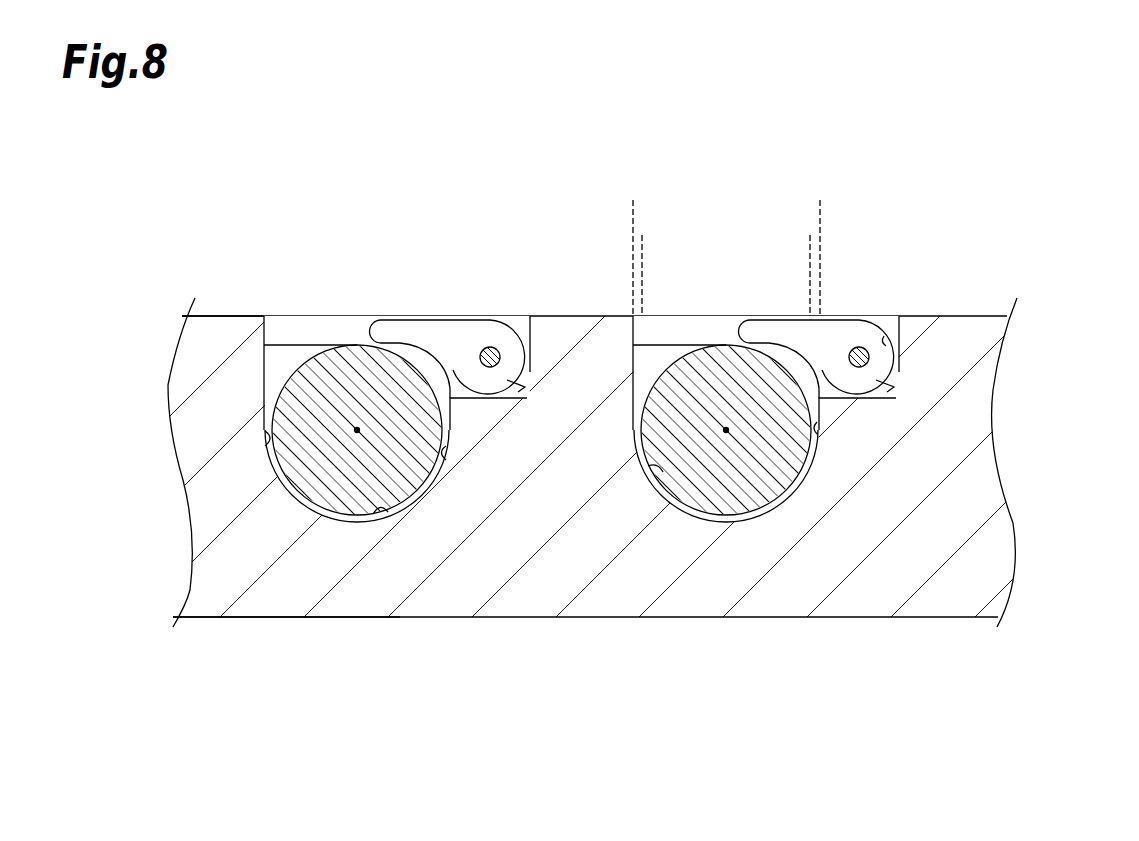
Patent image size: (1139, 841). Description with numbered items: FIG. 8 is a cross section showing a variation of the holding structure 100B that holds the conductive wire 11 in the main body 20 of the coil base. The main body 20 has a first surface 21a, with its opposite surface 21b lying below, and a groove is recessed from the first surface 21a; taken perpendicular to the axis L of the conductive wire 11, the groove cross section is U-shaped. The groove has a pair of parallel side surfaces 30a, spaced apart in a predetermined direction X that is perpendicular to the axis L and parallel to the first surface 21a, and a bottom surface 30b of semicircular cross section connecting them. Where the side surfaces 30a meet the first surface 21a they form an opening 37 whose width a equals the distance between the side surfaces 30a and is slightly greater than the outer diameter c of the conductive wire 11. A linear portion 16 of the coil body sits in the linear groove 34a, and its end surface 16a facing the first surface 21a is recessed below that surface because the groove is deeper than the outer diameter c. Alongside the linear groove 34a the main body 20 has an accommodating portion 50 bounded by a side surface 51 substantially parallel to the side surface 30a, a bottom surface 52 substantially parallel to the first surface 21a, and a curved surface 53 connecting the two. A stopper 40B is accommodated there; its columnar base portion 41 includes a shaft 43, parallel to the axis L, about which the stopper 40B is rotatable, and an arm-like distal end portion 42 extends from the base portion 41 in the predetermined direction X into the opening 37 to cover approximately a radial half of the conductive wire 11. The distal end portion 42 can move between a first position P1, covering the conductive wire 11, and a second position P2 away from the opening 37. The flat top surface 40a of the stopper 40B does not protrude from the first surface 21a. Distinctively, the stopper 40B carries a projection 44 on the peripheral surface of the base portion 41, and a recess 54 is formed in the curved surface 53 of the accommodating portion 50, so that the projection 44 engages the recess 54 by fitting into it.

The holding structure 100B is at (413, 178).
The main body 20 is at (1013, 497).
The first surface 21a is at (214, 316).
The lower surface of base member 21b is at (255, 617).
The opening 37 is at (265, 335).
The conductive wire 11 is at (305, 344).
The linear portion 16 is at (347, 490).
The end surface 16a is at (355, 344).
The axis L is at (354, 434).
The side surface 30a is at (266, 445).
The bottom surface 30b is at (381, 514).
The linear groove 34a is at (270, 388).
The stopper 40B is at (520, 316).
The top surface 40a is at (462, 320).
The base portion 41 is at (523, 312).
The distal end portion 42 is at (420, 320).
The shaft 43 is at (491, 368).
The projection 44 is at (453, 372).
The accommodating portion 50 is at (521, 312).
The side surface 51 is at (888, 340).
The bottom surface 52 is at (819, 400).
The curved surface 53 is at (873, 398).
The recess 54 is at (522, 388).
The first position P1 is at (387, 314).
The second position P2 is at (496, 228).
The predetermined direction X is at (762, 152).
The width a is at (634, 216).
The outer diameter c is at (643, 254).